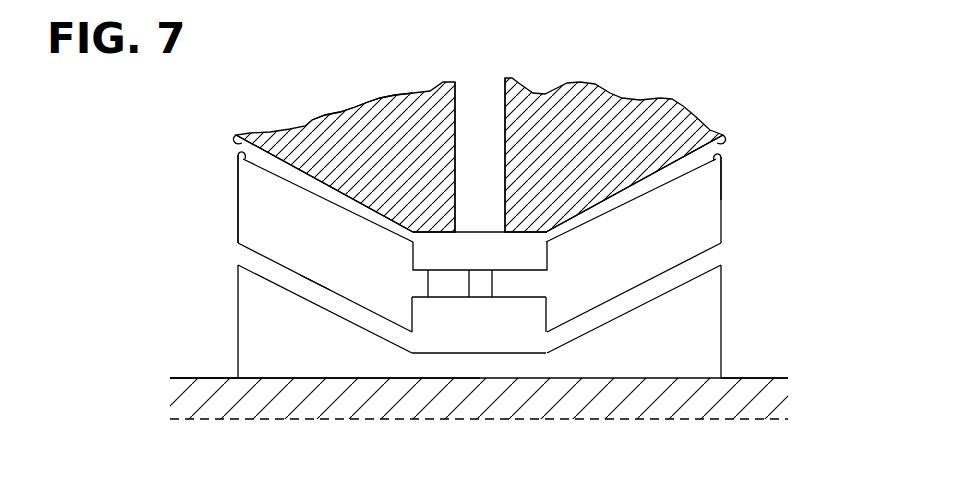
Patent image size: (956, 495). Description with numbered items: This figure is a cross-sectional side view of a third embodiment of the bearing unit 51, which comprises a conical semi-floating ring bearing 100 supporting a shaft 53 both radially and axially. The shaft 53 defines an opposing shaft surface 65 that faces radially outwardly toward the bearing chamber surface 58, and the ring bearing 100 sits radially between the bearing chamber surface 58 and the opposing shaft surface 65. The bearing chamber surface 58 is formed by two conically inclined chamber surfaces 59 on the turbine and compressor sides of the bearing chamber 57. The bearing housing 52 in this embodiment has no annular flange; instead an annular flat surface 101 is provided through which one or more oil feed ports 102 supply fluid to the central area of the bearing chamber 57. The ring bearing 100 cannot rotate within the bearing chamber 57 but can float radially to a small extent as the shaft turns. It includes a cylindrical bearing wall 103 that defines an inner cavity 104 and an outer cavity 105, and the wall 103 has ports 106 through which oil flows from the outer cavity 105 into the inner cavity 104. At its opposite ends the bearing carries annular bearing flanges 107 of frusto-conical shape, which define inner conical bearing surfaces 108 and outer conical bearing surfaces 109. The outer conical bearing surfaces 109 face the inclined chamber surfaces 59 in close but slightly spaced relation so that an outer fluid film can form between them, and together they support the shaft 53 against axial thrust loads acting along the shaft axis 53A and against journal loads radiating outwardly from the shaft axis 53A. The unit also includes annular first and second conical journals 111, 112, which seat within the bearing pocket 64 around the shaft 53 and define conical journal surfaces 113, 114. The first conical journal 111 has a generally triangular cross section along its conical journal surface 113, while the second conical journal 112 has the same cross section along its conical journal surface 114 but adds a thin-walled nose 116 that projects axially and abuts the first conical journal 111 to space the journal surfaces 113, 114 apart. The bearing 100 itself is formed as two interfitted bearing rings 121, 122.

The bearing unit 51 is at (135, 371).
The bearing housing 52 is at (598, 98).
The shaft 53 is at (680, 431).
The shaft axis 53A is at (582, 422).
The bearing chamber 57 is at (220, 110).
The bearing chamber surface 58 is at (297, 158).
The inclined chamber surfaces 59 is at (235, 138).
The bearing pocket 64 is at (768, 363).
The opposing shaft surface 65 is at (183, 378).
The conical semi-floating ring bearing 100 is at (197, 191).
The annular flat surface 101 is at (456, 231).
The oil feed ports 102 is at (480, 93).
The cylindrical bearing wall 103 is at (515, 285).
The inner cavity 104 is at (436, 338).
The outer cavity 105 is at (520, 248).
The ports 106 is at (492, 292).
The annular bearing flanges 107 is at (229, 216).
The inner conical bearing surfaces 108 is at (245, 258).
The outer conical bearing surfaces 109 is at (240, 157).
The first conical journal 111 is at (257, 372).
The second conical journal 112 is at (731, 356).
The conical journal surface 113 is at (298, 294).
The conical journal surface 114 is at (699, 282).
The thin-walled nose 116 is at (473, 365).
The bearing ring 121 is at (248, 233).
The bearing ring 122 is at (707, 178).